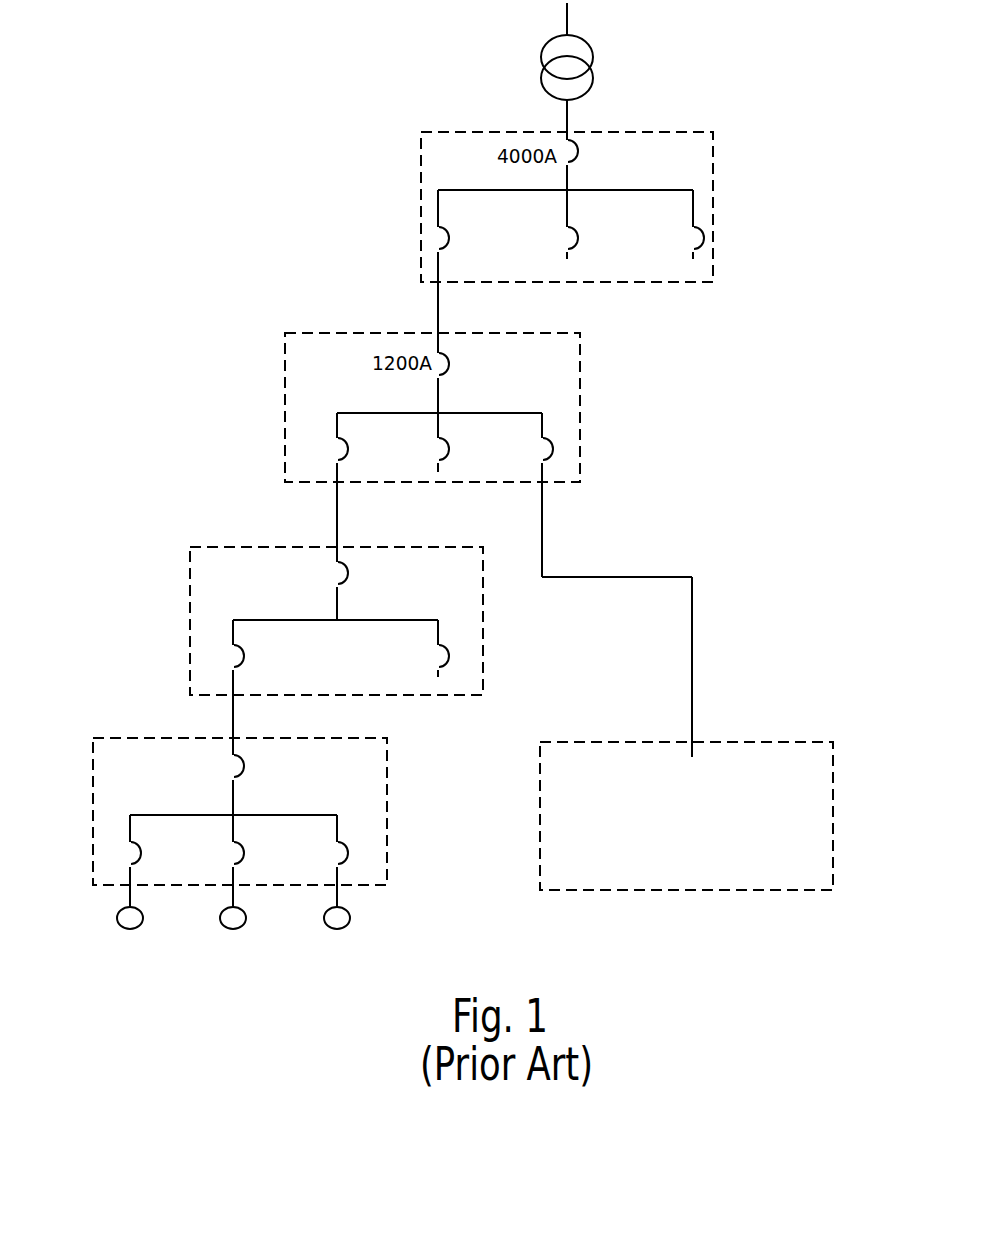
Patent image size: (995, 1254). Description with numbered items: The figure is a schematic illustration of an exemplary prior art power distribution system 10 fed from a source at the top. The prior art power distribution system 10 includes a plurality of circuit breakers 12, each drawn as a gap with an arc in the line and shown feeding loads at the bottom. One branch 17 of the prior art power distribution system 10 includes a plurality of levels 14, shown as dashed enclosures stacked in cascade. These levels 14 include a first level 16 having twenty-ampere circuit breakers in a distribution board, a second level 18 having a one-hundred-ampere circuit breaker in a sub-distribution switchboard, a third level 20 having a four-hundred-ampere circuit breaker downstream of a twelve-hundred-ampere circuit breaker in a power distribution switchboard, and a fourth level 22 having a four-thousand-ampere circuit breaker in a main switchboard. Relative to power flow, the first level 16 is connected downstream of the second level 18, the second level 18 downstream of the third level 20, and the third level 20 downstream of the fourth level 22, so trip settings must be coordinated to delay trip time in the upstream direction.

The prior art power distribution system 10 is at (830, 133).
The circuit breakers 12 is at (134, 862).
The levels 14 is at (418, 202).
The first level 16 is at (92, 827).
The branch 17 is at (162, 721).
The second level 18 is at (190, 663).
The third level 20 is at (282, 437).
The fourth level 22 is at (418, 238).